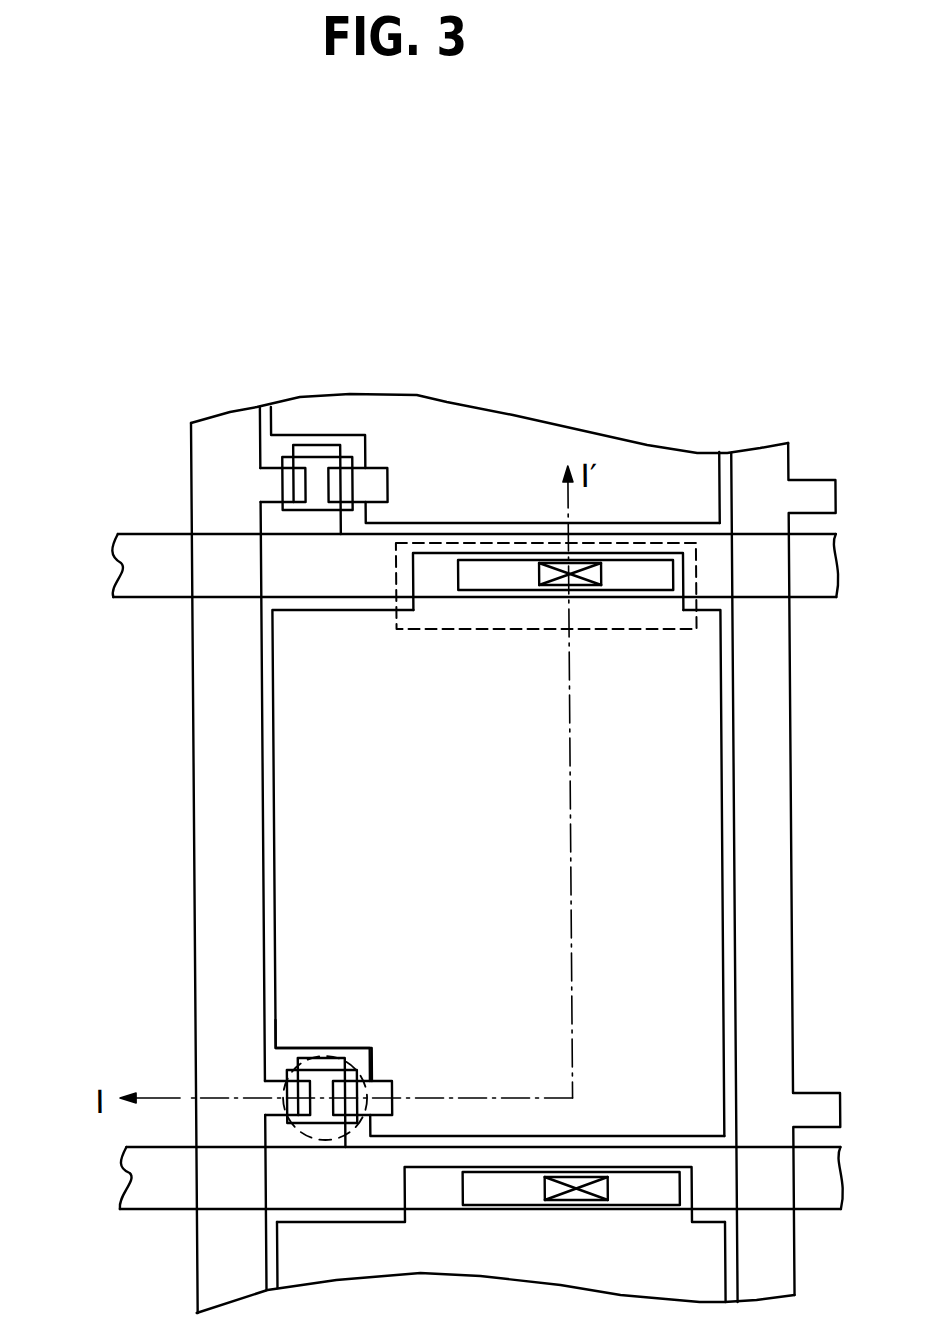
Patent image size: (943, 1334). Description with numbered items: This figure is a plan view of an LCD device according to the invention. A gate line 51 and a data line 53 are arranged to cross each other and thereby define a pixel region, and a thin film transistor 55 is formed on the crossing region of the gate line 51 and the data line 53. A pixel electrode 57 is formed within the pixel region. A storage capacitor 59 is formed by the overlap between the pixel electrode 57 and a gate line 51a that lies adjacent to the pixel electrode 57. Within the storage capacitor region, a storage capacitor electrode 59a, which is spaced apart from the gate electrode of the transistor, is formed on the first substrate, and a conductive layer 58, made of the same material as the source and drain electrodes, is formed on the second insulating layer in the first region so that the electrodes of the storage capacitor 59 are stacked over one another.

The gate line 51 is at (134, 1173).
The gate line adjacent to the pixel electrode 51a is at (136, 562).
The data line 53 is at (224, 790).
The thin film transistor 55 is at (267, 1093).
The pixel electrode 57 is at (289, 918).
The conductive layer 58 is at (507, 592).
The storage capacitor 59 is at (663, 630).
The storage capacitor electrode 59a is at (622, 597).